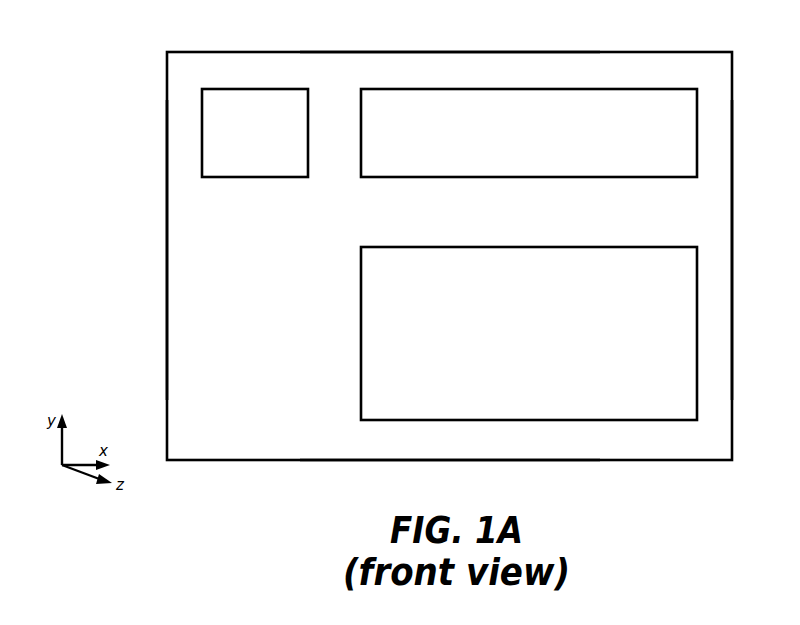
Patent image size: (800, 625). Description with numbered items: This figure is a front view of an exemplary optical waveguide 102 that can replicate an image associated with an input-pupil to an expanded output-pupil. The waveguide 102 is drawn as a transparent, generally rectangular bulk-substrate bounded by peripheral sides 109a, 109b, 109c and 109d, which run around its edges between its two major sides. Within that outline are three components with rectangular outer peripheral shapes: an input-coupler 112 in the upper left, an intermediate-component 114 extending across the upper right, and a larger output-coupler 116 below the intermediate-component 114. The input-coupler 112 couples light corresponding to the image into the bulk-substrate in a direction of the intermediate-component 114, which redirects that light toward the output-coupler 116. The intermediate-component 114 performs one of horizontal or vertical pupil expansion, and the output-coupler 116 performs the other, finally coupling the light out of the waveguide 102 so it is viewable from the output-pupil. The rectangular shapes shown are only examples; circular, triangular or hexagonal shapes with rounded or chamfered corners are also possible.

The optical waveguide 102 is at (137, 88).
The peripheral side 109a is at (732, 183).
The peripheral side 109b is at (167, 200).
The peripheral side 109c is at (452, 52).
The peripheral side 109d is at (455, 460).
The input-coupler 112 is at (297, 108).
The intermediate-component 114 is at (667, 112).
The output-coupler 116 is at (670, 270).